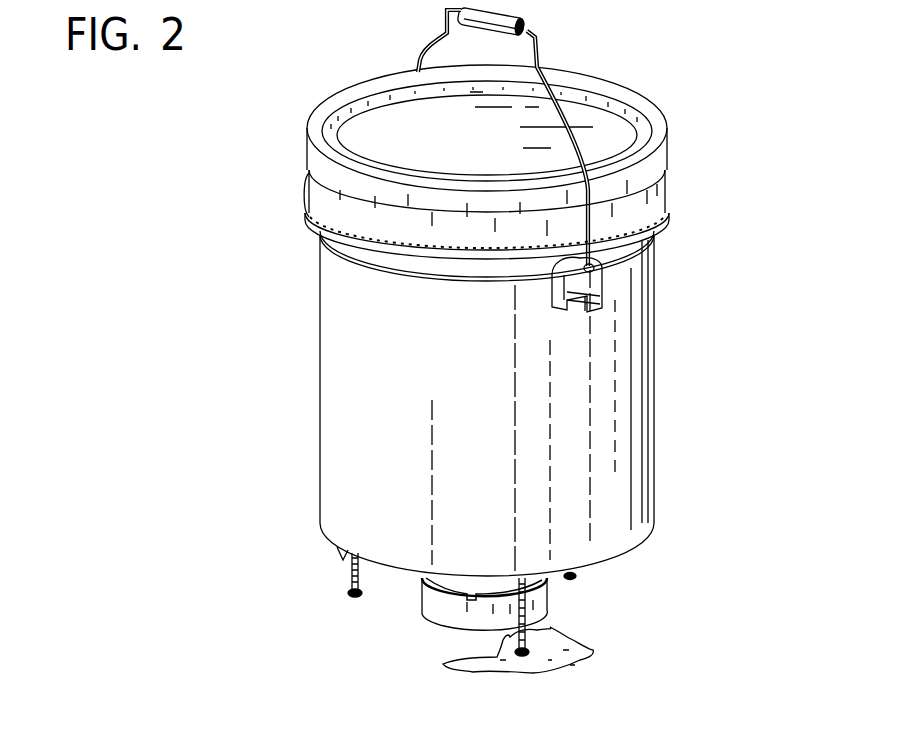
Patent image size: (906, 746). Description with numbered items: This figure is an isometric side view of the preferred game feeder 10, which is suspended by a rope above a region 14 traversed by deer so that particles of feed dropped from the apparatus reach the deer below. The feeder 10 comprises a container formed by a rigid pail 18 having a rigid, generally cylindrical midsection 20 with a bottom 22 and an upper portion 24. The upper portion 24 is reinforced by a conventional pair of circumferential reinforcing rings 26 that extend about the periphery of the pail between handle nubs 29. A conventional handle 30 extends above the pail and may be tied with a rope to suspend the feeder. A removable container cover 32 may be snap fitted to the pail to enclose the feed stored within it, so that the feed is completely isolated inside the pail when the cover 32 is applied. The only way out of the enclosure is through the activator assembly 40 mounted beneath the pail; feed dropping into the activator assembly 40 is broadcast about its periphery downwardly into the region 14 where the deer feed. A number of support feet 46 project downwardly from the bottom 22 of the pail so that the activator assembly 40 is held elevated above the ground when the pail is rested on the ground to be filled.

The feeder 10 is at (677, 82).
The region 14 is at (492, 656).
The rigid pail 18 is at (643, 334).
The midsection 20 is at (640, 400).
The bottom 22 is at (348, 548).
The upper portion 24 is at (648, 203).
The circumferential reinforcing rings 26 is at (656, 238).
The handle nubs 29 is at (573, 286).
The handle 30 is at (540, 47).
The container cover 32 is at (352, 101).
The activator assembly 40 is at (414, 606).
The support feet 46 is at (343, 582).